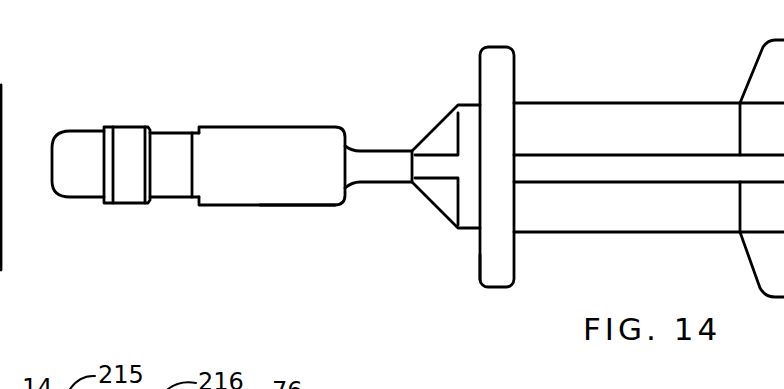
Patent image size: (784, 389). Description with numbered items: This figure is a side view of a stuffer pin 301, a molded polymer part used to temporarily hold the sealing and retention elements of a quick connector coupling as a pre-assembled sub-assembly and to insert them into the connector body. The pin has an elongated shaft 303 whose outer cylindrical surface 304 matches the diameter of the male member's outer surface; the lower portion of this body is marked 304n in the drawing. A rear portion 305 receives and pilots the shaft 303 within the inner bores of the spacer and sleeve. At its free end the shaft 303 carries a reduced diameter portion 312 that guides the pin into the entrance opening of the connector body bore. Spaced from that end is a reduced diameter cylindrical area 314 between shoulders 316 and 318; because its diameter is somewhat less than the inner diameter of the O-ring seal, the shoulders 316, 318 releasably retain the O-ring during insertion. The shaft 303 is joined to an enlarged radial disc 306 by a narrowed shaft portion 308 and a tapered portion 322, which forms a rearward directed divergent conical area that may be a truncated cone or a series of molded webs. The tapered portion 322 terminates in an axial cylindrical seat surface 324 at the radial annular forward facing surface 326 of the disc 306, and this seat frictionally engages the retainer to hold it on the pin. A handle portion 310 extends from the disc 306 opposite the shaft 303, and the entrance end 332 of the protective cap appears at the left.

The stuffer pin 301 is at (399, 185).
The elongated shaft 303 is at (261, 135).
The outer cylindrical surface 304 is at (125, 127).
The body lower portion 304n is at (303, 205).
The rear portion 305 is at (112, 128).
The enlarged radial disc 306 is at (506, 47).
The narrowed shaft portion 308 is at (395, 183).
The handle portion 310 is at (593, 223).
The reduced diameter portion 312 is at (75, 198).
The reduced diameter cylindrical area 314 is at (165, 129).
The shoulder 316 is at (150, 201).
The shoulder 318 is at (189, 210).
The tapered portion 322 is at (435, 210).
The axial cylindrical seat surface 324 is at (465, 230).
The radial annular forward facing surface 326 is at (479, 266).
The entrance end 332 is at (2, 80).